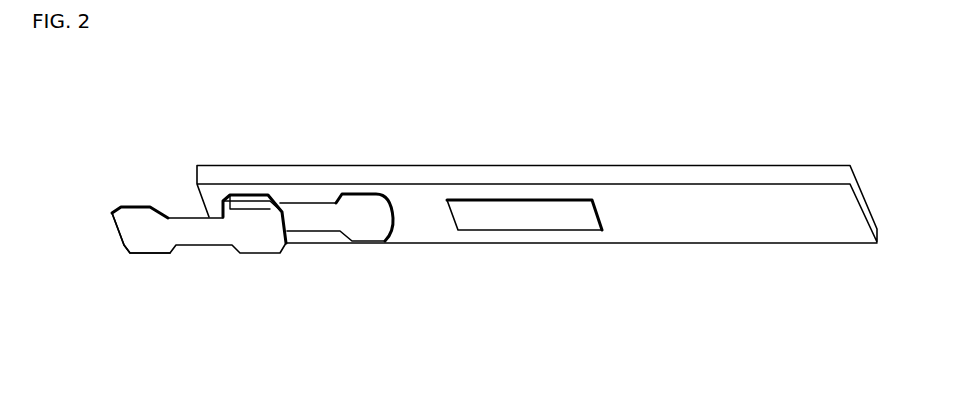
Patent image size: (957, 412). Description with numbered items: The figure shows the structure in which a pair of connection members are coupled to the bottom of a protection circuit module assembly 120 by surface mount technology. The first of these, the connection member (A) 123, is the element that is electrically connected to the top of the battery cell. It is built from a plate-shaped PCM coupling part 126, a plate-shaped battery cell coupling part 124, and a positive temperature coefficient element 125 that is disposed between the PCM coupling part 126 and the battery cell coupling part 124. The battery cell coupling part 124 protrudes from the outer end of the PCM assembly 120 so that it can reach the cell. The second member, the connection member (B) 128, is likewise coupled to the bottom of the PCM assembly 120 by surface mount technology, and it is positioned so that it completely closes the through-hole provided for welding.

The PCM assembly 120 is at (413, 166).
The connection member (A) 123 is at (157, 186).
The battery cell coupling part 124 is at (167, 240).
The positive temperature coefficient (PTC) element 125 is at (246, 202).
The PCM coupling part 126 is at (363, 223).
The connection member (B) 128 is at (550, 223).